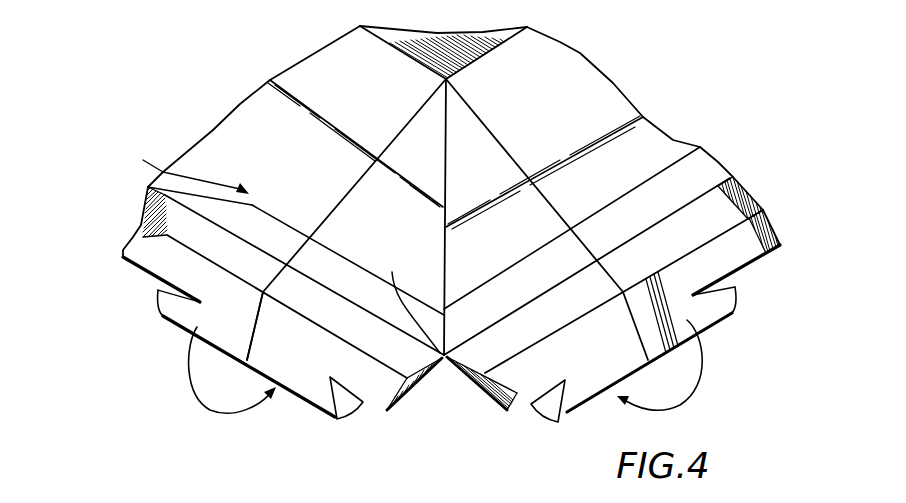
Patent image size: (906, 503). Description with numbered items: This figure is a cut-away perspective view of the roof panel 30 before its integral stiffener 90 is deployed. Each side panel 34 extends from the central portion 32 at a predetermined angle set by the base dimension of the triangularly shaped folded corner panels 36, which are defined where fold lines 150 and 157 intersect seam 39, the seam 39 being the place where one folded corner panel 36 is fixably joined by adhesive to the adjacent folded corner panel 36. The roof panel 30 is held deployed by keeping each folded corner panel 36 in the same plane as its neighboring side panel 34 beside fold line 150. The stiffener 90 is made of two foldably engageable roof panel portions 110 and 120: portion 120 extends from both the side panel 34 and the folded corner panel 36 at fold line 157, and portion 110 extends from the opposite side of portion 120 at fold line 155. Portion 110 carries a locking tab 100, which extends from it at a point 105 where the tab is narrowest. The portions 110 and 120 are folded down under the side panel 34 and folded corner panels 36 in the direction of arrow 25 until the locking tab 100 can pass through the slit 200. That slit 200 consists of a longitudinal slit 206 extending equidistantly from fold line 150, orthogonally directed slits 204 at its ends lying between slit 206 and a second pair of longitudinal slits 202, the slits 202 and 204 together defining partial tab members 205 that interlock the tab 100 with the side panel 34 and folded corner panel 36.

The directional arrow 25 is at (197, 408).
The roof panel 30 is at (612, 84).
The central portion 32 is at (440, 54).
The side panel 34 is at (317, 158).
The folded corner panel 36 is at (402, 228).
The seam 39 is at (449, 118).
The stiffener 90 is at (160, 300).
The locking tab 100 is at (300, 372).
The point 105 is at (338, 419).
The roof panel portion 110 is at (388, 412).
The roof panel portion 120 is at (416, 366).
The fold line 150 is at (360, 162).
The fold line 155 is at (143, 270).
The fold line 157 is at (140, 212).
The slit 200 is at (253, 196).
The longitudinal slit 202 is at (247, 197).
The orthogonally directed slit 204 is at (444, 372).
The partial tab member 205 is at (497, 274).
The longitudinal slit 206 is at (298, 222).